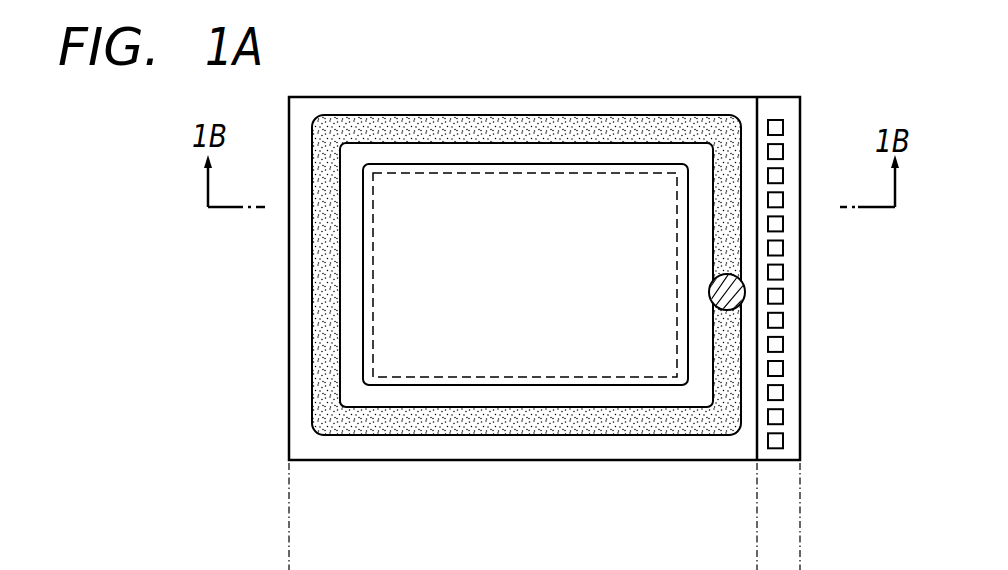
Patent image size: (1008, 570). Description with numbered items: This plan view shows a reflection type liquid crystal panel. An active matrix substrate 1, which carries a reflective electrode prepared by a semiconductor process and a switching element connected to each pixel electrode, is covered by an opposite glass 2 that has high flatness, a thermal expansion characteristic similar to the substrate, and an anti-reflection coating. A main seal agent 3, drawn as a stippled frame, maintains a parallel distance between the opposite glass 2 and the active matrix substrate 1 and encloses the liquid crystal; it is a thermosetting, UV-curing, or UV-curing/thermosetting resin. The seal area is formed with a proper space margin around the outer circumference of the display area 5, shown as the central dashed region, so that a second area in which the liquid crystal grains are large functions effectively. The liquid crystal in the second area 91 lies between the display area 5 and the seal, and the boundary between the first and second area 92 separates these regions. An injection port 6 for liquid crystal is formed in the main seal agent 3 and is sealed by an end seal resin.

The active matrix substrate 1 is at (778, 107).
The opposite glass 2 is at (715, 107).
The main seal agent 3 is at (723, 363).
The display area 5 is at (452, 193).
The injection port 6 is at (745, 291).
The liquid crystal in the second area 91 is at (438, 393).
The boundary between the first and second area 92 is at (615, 388).